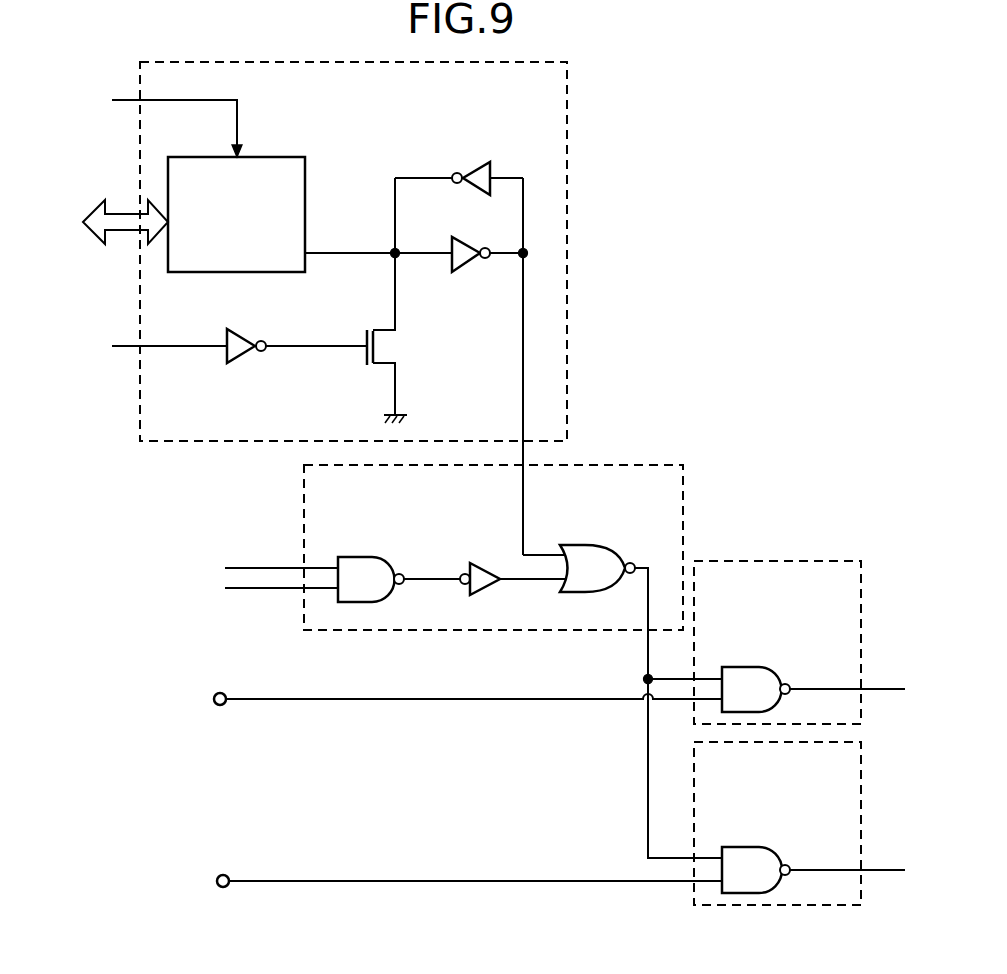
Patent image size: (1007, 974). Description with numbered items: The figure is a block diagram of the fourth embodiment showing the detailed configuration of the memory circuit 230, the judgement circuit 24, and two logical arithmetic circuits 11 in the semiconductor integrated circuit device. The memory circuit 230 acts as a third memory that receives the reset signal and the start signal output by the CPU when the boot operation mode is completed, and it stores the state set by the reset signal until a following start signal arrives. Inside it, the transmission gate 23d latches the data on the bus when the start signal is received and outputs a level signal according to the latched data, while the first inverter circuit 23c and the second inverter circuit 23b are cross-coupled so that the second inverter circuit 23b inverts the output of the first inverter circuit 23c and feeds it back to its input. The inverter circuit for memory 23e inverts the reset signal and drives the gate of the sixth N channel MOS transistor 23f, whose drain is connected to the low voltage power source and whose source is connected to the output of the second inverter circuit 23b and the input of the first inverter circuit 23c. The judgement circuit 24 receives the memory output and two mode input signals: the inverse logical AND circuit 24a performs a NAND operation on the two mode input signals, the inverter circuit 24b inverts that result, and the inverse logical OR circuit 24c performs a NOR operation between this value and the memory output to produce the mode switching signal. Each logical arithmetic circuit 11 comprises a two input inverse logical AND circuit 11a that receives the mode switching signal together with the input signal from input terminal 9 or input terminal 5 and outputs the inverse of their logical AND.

The memory circuit 230 is at (567, 85).
The second inverter circuit 23b is at (470, 160).
The first inverter circuit 23c is at (458, 273).
The transmission gate 23d is at (280, 273).
The inverter circuit for memory 23e is at (237, 364).
The sixth N channel MOS transistor 23f is at (396, 347).
The judgement circuit 24 is at (683, 487).
The inverse logical AND circuit 24a is at (363, 556).
The inverter circuit for the judgement 24b is at (480, 562).
The inverse logical OR circuit 24c is at (572, 592).
The logical arithmetic circuit 11 is at (811, 561).
The inverse logical AND circuit of two inputs 11a is at (772, 666).
The input terminal 9 is at (221, 692).
The input terminal 5 is at (224, 874).